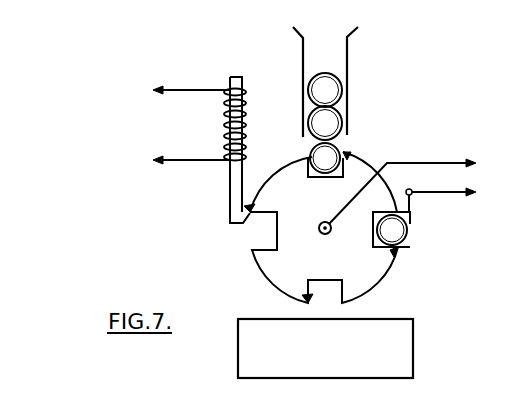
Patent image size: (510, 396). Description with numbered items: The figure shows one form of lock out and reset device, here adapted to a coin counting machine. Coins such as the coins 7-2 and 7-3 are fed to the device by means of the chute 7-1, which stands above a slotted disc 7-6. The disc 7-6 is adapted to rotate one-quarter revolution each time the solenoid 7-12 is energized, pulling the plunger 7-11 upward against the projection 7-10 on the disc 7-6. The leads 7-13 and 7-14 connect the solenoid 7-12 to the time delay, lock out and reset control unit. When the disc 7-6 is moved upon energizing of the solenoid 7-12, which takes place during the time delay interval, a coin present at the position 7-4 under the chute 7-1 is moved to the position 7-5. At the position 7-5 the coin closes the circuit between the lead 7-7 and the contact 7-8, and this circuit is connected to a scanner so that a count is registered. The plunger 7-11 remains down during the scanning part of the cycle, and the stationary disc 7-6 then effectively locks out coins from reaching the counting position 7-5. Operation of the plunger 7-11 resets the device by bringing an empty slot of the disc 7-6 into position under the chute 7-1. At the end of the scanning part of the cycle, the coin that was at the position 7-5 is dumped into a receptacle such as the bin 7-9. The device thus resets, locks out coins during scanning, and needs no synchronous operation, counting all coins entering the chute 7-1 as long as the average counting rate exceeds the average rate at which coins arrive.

The chute 7-1 is at (349, 57).
The coin 7-2 is at (333, 87).
The coin 7-3 is at (330, 124).
The coin position 7-4 is at (328, 154).
The counting position 7-5 is at (404, 240).
The slotted disc 7-6 is at (277, 276).
The lead 7-7 is at (432, 165).
The contact 7-8 is at (432, 194).
The bin 7-9 is at (406, 342).
The projection 7-10 is at (252, 207).
The plunger 7-11 is at (231, 195).
The solenoid 7-12 is at (245, 120).
The lead 7-13 is at (211, 88).
The lead 7-14 is at (216, 162).